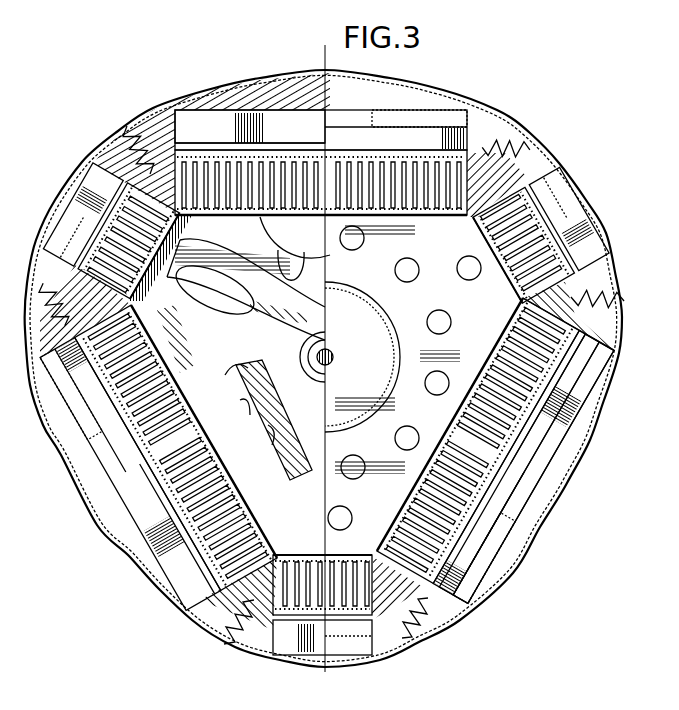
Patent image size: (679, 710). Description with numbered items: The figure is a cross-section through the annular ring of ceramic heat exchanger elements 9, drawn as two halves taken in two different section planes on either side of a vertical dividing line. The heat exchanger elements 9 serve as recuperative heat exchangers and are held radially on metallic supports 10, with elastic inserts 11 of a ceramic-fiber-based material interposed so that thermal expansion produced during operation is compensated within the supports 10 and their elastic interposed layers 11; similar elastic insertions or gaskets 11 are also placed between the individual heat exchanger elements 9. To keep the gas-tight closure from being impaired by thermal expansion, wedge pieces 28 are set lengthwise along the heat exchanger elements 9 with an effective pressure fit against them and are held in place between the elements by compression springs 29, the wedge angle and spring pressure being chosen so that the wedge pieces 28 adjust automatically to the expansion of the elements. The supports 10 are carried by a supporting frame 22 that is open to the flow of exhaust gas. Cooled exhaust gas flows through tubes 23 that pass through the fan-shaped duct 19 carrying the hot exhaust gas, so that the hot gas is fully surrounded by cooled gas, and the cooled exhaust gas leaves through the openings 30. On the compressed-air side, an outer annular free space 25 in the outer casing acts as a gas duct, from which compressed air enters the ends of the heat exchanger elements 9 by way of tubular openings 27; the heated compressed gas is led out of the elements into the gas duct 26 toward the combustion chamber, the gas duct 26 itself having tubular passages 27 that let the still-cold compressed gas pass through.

The ceramic heat exchanger elements 9 is at (411, 170).
The metallic supports 10 is at (213, 225).
The elastic inserts 11 is at (252, 217).
The fan-shaped duct of hot exhaust gases 19 is at (187, 323).
The supporting frame 22 is at (330, 410).
The tubes 23 is at (225, 375).
The outer annular free space 25 is at (264, 94).
The gas duct 26 is at (582, 397).
The tubular openings 27 is at (540, 468).
The wedge pieces 28 is at (604, 292).
The compression springs 29 is at (607, 320).
The openings 30 is at (437, 312).